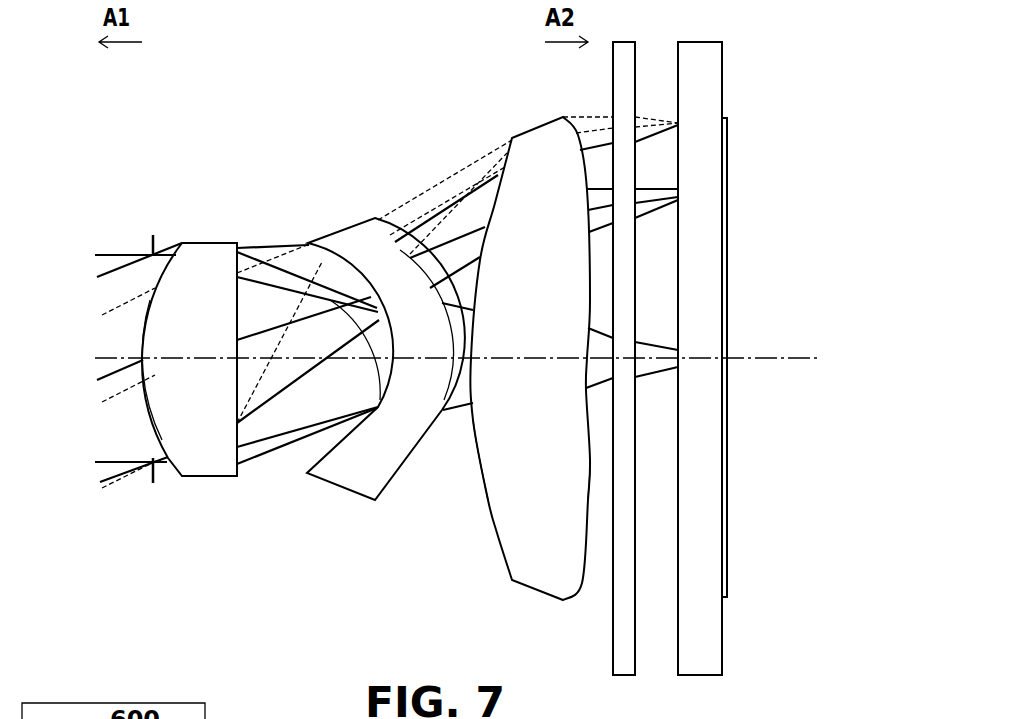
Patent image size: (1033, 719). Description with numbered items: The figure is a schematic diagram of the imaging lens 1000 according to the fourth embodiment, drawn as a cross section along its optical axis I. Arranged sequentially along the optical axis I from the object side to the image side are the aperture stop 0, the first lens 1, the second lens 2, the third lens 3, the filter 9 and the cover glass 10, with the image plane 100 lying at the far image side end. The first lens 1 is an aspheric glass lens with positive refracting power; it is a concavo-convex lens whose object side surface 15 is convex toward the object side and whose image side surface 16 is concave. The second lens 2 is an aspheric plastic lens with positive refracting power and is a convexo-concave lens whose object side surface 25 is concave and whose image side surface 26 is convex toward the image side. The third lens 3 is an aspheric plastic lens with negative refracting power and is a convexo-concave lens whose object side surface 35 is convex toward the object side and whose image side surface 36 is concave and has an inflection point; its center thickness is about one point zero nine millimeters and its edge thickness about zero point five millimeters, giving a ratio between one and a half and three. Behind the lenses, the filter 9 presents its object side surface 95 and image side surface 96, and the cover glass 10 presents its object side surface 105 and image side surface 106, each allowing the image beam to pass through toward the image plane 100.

The imaging lens 1000 is at (114, 104).
The aperture stop 0 is at (150, 240).
The first lens 1 is at (205, 242).
The object side surface 15 is at (157, 435).
The image side surface 16 is at (237, 466).
The second lens 2 is at (340, 232).
The object side surface 25 is at (312, 466).
The image side surface 26 is at (380, 496).
The third lens 3 is at (536, 128).
The object side surface 35 is at (504, 563).
The image side surface 36 is at (583, 582).
The filter 9 is at (620, 42).
The object side surface 95 is at (612, 661).
The image side surface 96 is at (637, 660).
The cover glass 10 is at (697, 42).
The object side surface 105 is at (680, 660).
The image side surface 106 is at (723, 664).
The image plane 100 is at (727, 590).
The optical axis I is at (112, 358).